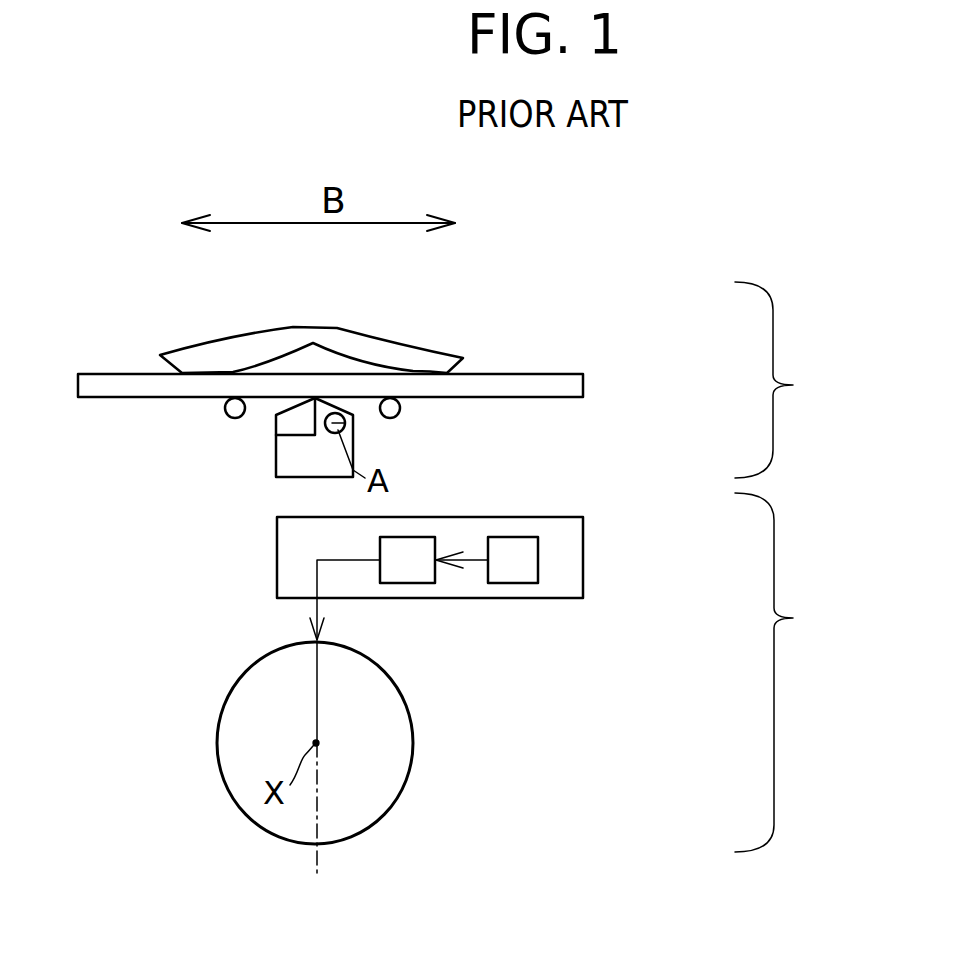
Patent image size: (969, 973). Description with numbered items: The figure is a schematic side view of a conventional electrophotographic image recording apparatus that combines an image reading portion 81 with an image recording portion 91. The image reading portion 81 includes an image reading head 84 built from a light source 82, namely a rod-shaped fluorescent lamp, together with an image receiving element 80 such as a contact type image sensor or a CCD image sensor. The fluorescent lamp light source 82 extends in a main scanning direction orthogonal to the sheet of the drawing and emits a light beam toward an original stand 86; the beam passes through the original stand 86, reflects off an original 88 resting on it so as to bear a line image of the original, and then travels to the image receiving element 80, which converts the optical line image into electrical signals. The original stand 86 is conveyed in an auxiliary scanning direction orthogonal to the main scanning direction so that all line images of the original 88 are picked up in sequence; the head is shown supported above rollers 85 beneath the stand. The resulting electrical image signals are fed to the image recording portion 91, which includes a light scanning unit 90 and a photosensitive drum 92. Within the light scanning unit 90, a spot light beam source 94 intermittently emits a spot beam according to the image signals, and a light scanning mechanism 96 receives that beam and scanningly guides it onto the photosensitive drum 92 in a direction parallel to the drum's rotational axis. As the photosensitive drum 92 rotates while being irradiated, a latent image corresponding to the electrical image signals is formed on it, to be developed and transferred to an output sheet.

The image receiving element 80 is at (277, 427).
The image reading portion 81 is at (789, 380).
The light source 82 is at (346, 425).
The image reading head 84 is at (280, 460).
The guide rollers 85 is at (225, 411).
The original stand 86 is at (100, 388).
The original 88 is at (380, 343).
The light scanning unit 90 is at (570, 553).
The image recording portion 91 is at (789, 672).
The photosensitive drum 92 is at (385, 765).
The spot light beam source 94 is at (513, 583).
The light scanning mechanism 96 is at (407, 583).